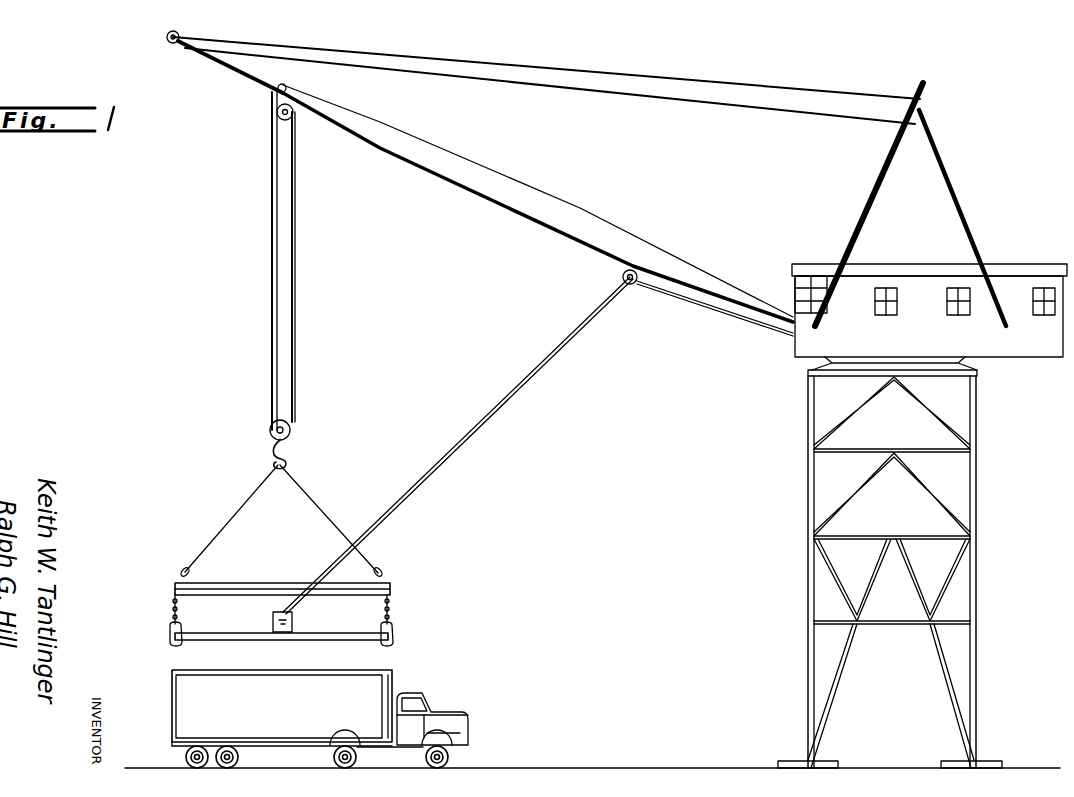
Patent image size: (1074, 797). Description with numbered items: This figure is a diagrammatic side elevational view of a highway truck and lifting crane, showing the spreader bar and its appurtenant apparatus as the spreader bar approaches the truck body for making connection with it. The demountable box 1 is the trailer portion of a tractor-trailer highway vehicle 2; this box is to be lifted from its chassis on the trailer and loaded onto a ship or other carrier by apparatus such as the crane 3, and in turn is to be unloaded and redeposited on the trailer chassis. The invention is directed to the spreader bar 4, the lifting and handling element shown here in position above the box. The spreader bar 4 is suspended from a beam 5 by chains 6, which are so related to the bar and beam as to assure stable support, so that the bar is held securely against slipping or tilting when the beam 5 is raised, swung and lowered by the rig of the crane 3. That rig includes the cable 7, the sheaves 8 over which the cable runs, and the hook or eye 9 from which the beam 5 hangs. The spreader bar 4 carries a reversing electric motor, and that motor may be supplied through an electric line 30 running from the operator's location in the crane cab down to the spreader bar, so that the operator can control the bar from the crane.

The box 1 is at (363, 688).
The tractor-trailer highway vehicle 2 is at (441, 700).
The crane 3 is at (797, 371).
The spreader bar 4 is at (165, 636).
The beam 5 is at (236, 583).
The chains 6 is at (172, 616).
The cable 7 is at (297, 326).
The sheaves 8 is at (296, 119).
The hook or eye 9 is at (287, 458).
The electric line 30 is at (501, 401).